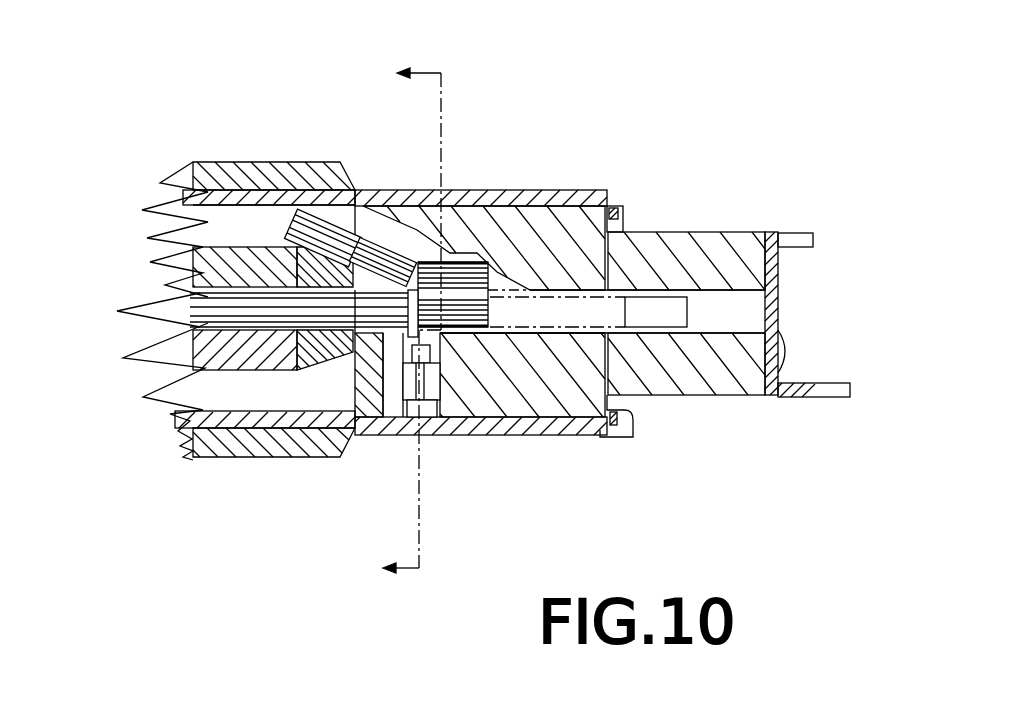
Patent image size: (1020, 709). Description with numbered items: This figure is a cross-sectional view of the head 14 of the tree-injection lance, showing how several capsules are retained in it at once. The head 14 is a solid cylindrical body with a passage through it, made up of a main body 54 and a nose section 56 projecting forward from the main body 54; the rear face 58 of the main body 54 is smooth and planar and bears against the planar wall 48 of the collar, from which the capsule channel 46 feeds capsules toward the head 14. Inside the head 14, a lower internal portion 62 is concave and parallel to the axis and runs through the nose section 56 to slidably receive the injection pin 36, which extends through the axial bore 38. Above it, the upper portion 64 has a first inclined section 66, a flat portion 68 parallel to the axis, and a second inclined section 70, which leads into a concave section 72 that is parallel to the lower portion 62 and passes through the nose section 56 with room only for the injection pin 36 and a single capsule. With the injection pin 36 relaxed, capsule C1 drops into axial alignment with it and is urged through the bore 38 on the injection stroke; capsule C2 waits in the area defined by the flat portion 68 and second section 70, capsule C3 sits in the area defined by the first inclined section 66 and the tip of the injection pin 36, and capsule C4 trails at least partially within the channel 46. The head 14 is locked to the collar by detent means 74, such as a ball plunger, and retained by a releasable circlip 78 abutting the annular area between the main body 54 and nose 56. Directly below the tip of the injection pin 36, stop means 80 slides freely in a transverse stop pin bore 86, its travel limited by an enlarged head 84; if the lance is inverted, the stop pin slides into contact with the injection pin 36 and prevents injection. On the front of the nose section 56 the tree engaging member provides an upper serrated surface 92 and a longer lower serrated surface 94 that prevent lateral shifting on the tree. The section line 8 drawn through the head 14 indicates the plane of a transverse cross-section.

The section line 8- 8 is at (412, 324).
The head 14 is at (657, 100).
The injection pin 36 is at (233, 308).
The bore 38 is at (735, 325).
The channel 46 is at (230, 165).
The planar wall 48 is at (343, 190).
The main body 54 is at (568, 230).
The nose section 56 is at (730, 233).
The rear face 58 is at (420, 222).
The lower internal portion 62 is at (687, 360).
The upper portion 64 is at (687, 260).
The first inclined section 66 is at (382, 232).
The flat portion 68 is at (472, 270).
The second inclined section 70 is at (500, 282).
The concave section 72 is at (645, 230).
The detent means 74 is at (560, 340).
The releasable circlip 78 is at (630, 420).
The stop means 80 is at (430, 417).
The enlarged head 84 is at (413, 420).
The stop pin bore 86 is at (440, 405).
The upper serrated tree engaging surface 92 is at (788, 235).
The lower serrated tree engaging surface 94 is at (830, 397).
The capsule C1 is at (522, 420).
The capsule C2 is at (457, 248).
The capsule C3 is at (383, 363).
The capsule C4 is at (278, 220).